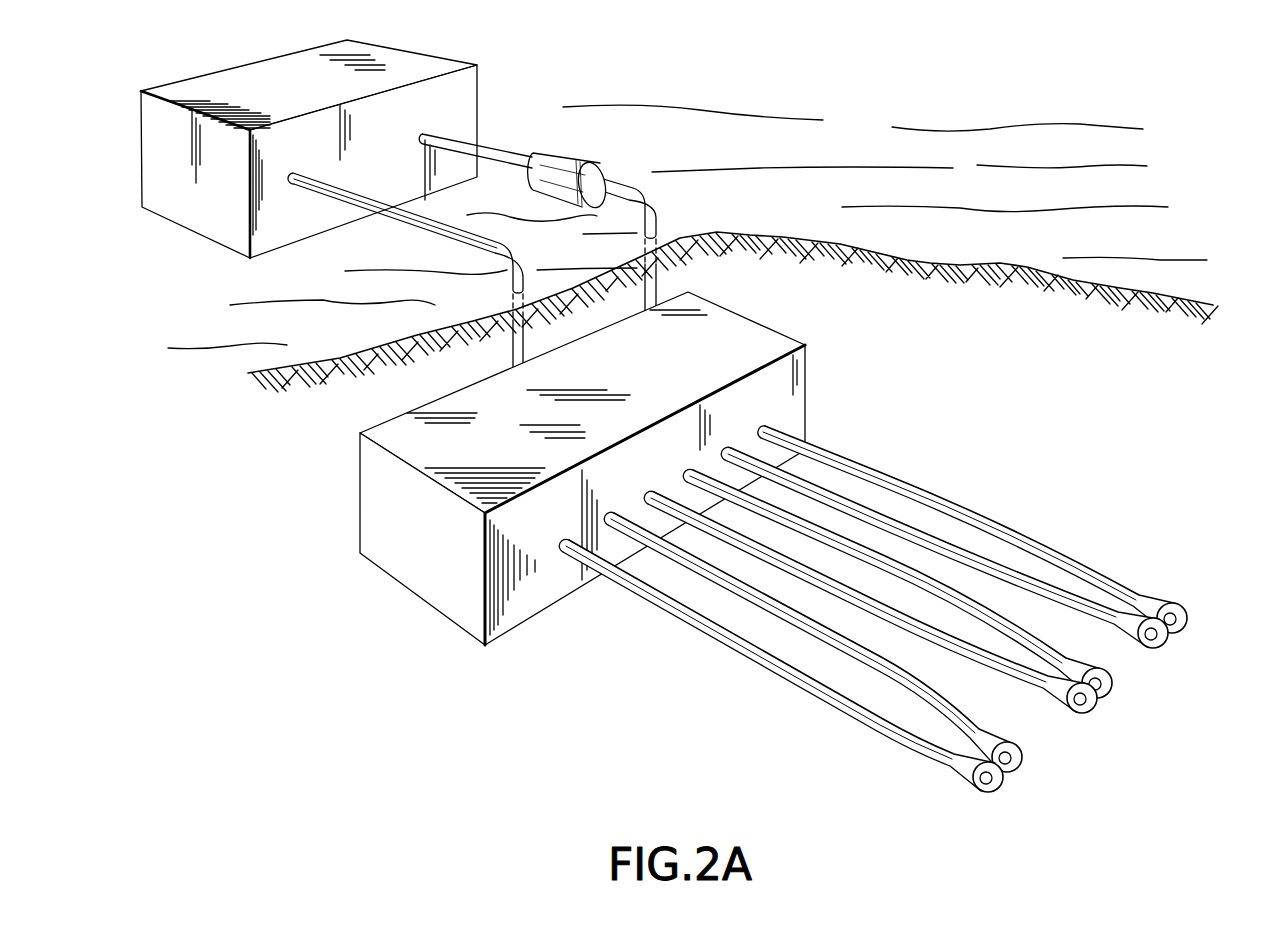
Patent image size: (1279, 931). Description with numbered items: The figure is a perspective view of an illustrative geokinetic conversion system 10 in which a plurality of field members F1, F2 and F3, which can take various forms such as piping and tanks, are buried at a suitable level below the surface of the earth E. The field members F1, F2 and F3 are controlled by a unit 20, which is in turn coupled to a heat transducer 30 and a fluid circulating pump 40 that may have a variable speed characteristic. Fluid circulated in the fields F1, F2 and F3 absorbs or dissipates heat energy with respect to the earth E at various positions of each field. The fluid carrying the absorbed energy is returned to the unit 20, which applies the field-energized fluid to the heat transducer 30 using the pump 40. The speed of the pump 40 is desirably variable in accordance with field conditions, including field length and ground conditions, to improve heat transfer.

The geokinetic conversion system 10 is at (728, 95).
The unit 20 is at (372, 498).
The heat transducer 30 is at (160, 150).
The fluid circulating pump 40 is at (550, 148).
The earth E is at (925, 250).
The field member F1 is at (1190, 637).
The field member F2 is at (1128, 701).
The field member F3 is at (1034, 780).